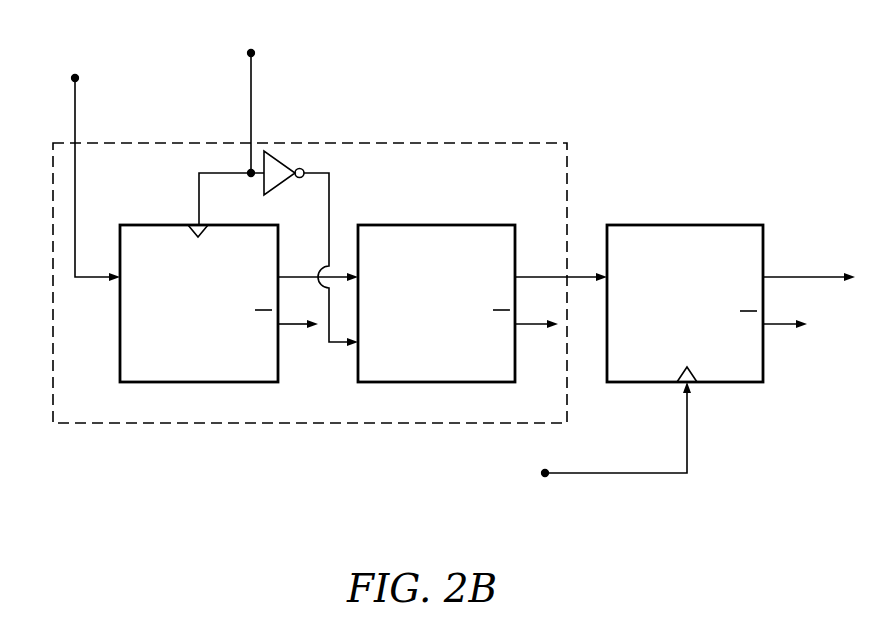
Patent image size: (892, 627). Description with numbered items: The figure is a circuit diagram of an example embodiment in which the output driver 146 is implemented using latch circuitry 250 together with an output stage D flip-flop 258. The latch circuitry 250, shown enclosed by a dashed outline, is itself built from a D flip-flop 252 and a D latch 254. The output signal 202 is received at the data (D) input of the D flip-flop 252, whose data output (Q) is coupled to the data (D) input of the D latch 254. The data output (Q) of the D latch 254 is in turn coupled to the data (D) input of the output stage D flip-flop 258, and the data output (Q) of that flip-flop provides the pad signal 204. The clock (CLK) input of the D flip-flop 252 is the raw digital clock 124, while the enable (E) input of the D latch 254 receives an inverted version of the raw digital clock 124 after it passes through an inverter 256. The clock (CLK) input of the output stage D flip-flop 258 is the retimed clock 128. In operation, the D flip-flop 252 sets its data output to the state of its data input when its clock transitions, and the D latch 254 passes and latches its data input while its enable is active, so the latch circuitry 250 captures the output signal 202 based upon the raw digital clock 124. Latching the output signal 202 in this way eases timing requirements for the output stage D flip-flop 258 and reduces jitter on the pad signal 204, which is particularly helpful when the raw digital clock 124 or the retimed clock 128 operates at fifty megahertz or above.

The output driver 146 is at (722, 58).
The output signal 202 is at (75, 128).
The raw digital clock 124 is at (251, 135).
The latch circuitry 250 is at (467, 142).
The inverter 256 is at (290, 170).
The D flip-flop 252 is at (217, 363).
The D latch 254 is at (455, 363).
The output stage D flip-flop 258 is at (702, 305).
The pad signal 204 is at (790, 278).
The retimed clock 128 is at (587, 472).